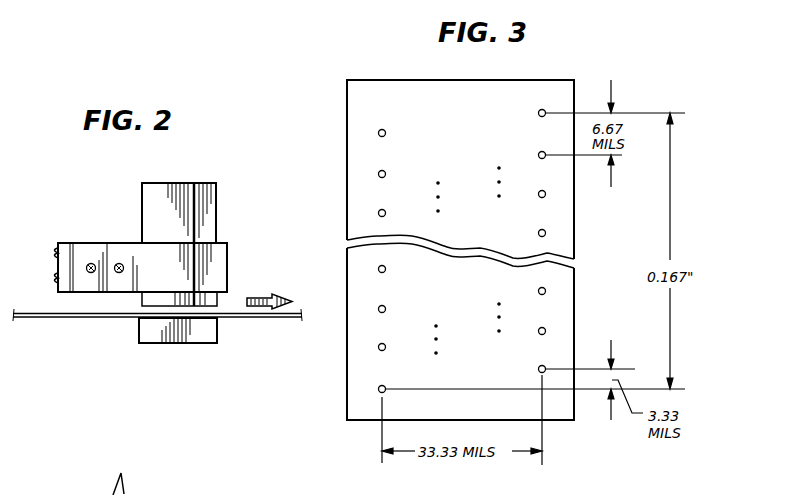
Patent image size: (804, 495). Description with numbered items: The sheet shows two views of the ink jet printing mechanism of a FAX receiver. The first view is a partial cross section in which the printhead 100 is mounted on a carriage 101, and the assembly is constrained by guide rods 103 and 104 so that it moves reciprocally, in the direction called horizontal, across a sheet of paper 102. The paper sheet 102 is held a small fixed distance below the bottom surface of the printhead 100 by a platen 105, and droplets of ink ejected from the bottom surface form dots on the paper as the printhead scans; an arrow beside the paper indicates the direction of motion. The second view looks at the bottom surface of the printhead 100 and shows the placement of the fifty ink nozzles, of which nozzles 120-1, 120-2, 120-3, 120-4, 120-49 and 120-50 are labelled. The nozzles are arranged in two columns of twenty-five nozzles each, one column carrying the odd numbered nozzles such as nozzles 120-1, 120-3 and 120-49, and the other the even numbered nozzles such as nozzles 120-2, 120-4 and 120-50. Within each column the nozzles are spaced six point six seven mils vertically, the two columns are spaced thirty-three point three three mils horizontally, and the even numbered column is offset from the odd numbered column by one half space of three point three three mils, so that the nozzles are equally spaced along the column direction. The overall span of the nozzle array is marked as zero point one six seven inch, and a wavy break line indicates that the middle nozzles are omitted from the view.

In FIG. 2, the printhead 100 is at (216, 202).
In FIG. 2, the carriage 101 is at (228, 258).
In FIG. 2, the sheet of paper 102 is at (62, 321).
In FIG. 2, the guide rod 103 is at (118, 258).
In FIG. 2, the guide rod 104 is at (89, 258).
In FIG. 2, the platen 105 is at (196, 343).
In FIG. 3, the ink nozzle 120-1 is at (539, 111).
In FIG. 3, the ink nozzle 120-2 is at (385, 131).
In FIG. 3, the ink nozzle 120-3 is at (539, 153).
In FIG. 3, the ink nozzle 120-4 is at (385, 172).
In FIG. 3, the ink nozzle 120-49 is at (540, 366).
In FIG. 3, the ink nozzle 120-50 is at (385, 387).